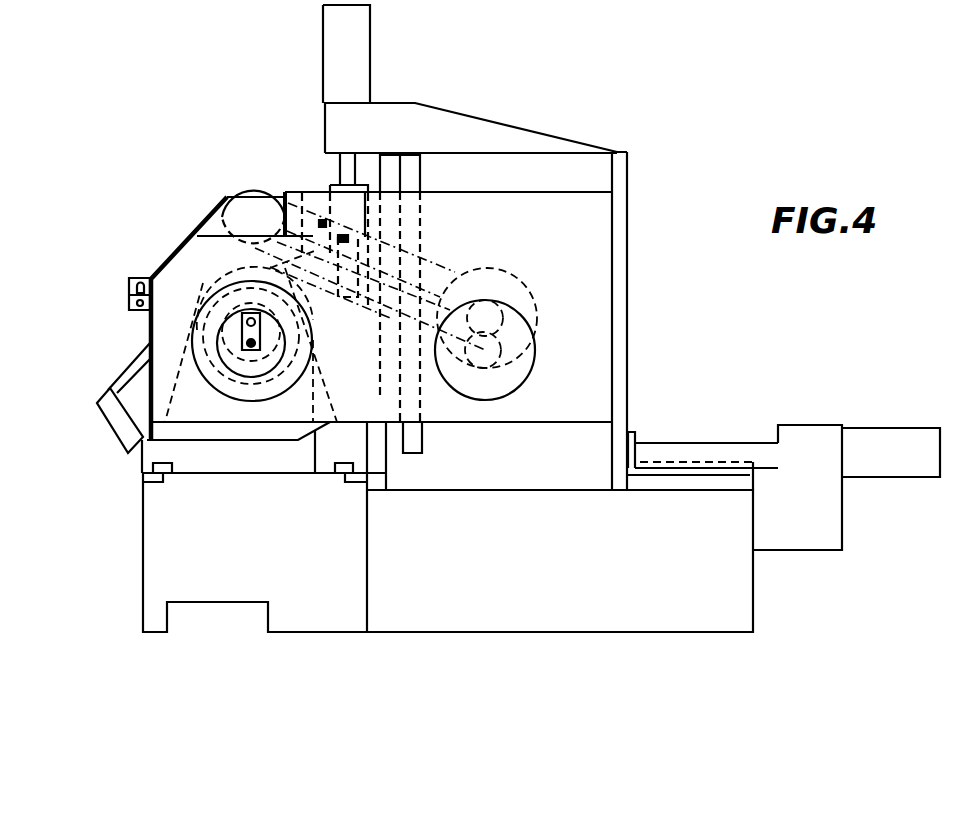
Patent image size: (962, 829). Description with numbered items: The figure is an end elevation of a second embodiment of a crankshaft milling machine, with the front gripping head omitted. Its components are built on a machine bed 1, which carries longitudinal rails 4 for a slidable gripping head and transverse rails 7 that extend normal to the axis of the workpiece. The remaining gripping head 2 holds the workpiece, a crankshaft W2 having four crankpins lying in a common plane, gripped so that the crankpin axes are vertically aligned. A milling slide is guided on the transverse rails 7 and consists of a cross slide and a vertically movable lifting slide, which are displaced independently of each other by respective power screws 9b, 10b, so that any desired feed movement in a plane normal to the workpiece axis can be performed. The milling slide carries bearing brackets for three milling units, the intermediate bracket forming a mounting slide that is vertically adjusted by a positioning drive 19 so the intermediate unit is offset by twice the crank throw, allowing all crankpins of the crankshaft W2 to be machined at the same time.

The machine bed 1 is at (727, 587).
The gripping head 2 is at (150, 418).
The longitudinal rails 4 is at (150, 478).
The transverse rails 7 is at (673, 475).
The power screw 9b is at (875, 445).
The power screw 10b is at (345, 47).
The positioning drive 19 is at (287, 230).
The crankshaft W2 is at (242, 330).